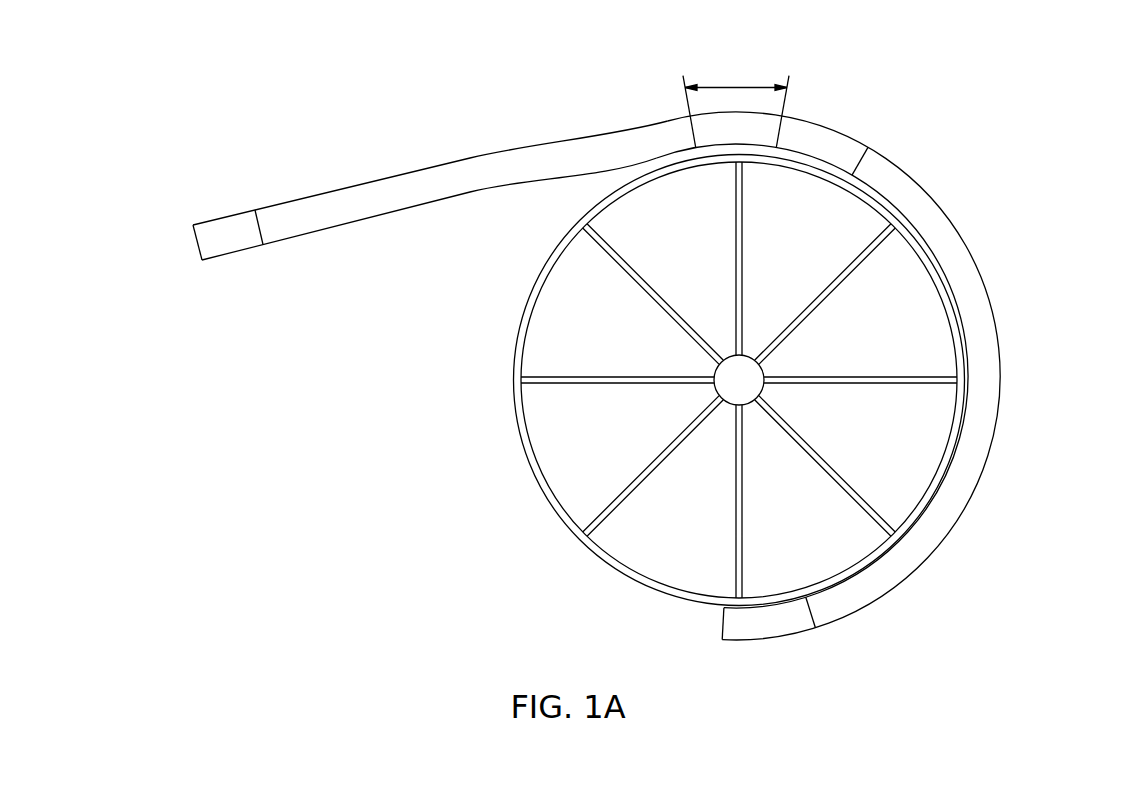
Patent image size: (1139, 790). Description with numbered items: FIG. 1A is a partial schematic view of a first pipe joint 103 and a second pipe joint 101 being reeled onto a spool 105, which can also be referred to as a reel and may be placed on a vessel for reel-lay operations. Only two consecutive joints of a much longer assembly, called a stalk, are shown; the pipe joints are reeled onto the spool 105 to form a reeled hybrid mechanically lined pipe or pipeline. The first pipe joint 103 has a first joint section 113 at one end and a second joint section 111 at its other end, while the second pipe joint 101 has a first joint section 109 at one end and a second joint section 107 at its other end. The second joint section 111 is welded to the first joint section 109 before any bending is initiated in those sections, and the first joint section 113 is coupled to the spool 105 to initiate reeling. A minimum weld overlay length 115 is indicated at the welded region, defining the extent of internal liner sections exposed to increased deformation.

The second pipe joint 101 is at (346, 174).
The first pipe joint 103 is at (998, 297).
The spool 105 is at (528, 463).
The second joint section 107 is at (205, 240).
The first joint section 109 is at (707, 128).
The second joint section 111 is at (820, 150).
The first joint section 113 is at (772, 623).
The minimum weld overlay length 115 is at (743, 82).